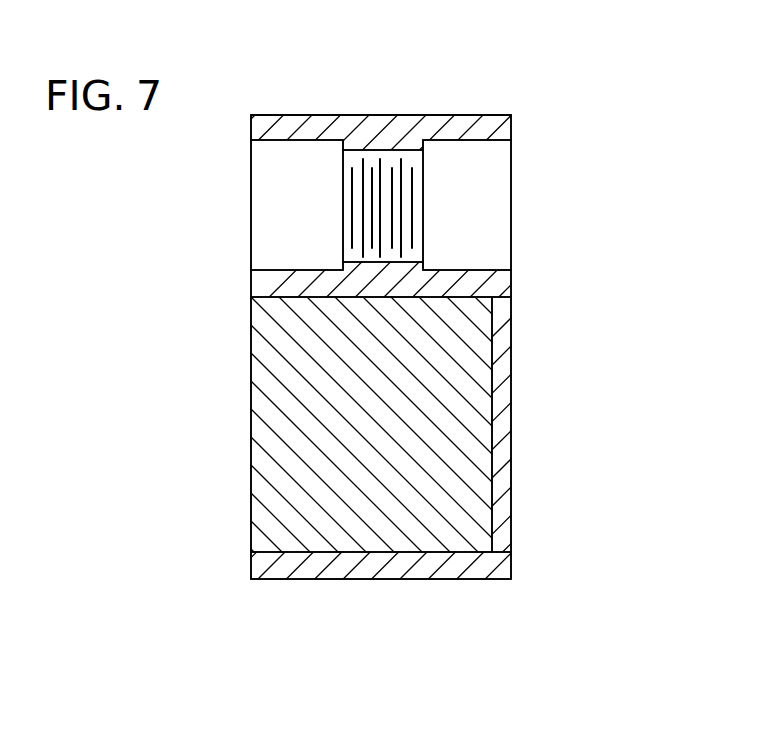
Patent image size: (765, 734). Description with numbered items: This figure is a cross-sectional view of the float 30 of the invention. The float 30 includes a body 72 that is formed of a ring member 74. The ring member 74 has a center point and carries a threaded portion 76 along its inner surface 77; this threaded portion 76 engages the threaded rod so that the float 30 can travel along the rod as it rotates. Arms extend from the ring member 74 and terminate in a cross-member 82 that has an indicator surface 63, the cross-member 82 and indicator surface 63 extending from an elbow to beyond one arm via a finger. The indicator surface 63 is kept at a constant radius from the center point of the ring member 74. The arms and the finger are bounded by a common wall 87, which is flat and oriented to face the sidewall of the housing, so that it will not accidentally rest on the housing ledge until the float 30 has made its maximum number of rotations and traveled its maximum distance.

The float 30 is at (284, 89).
The body 72 is at (396, 107).
The ring member 74 is at (251, 127).
The inner surface 77 is at (288, 223).
The threaded portion 76 is at (388, 248).
The cross-member 82 is at (251, 563).
The common wall 87 is at (500, 425).
The indicator surface 63 is at (470, 576).